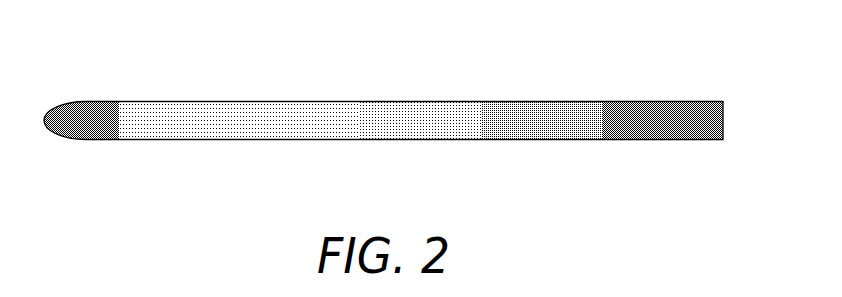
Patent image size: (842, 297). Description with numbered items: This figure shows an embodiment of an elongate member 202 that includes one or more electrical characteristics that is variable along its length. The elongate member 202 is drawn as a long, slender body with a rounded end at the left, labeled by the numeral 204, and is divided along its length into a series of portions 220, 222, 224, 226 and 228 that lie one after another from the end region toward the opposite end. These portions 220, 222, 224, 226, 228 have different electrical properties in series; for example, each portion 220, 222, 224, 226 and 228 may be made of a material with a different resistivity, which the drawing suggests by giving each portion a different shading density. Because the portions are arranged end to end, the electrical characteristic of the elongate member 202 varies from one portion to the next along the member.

The elongate member 202 is at (548, 141).
The distal tip 204 is at (66, 137).
The portion of the elongate member 220 is at (175, 101).
The portion of the elongate member 222 is at (297, 101).
The portion of the elongate member 224 is at (418, 101).
The portion of the elongate member 226 is at (547, 101).
The portion of the elongate member 228 is at (661, 101).